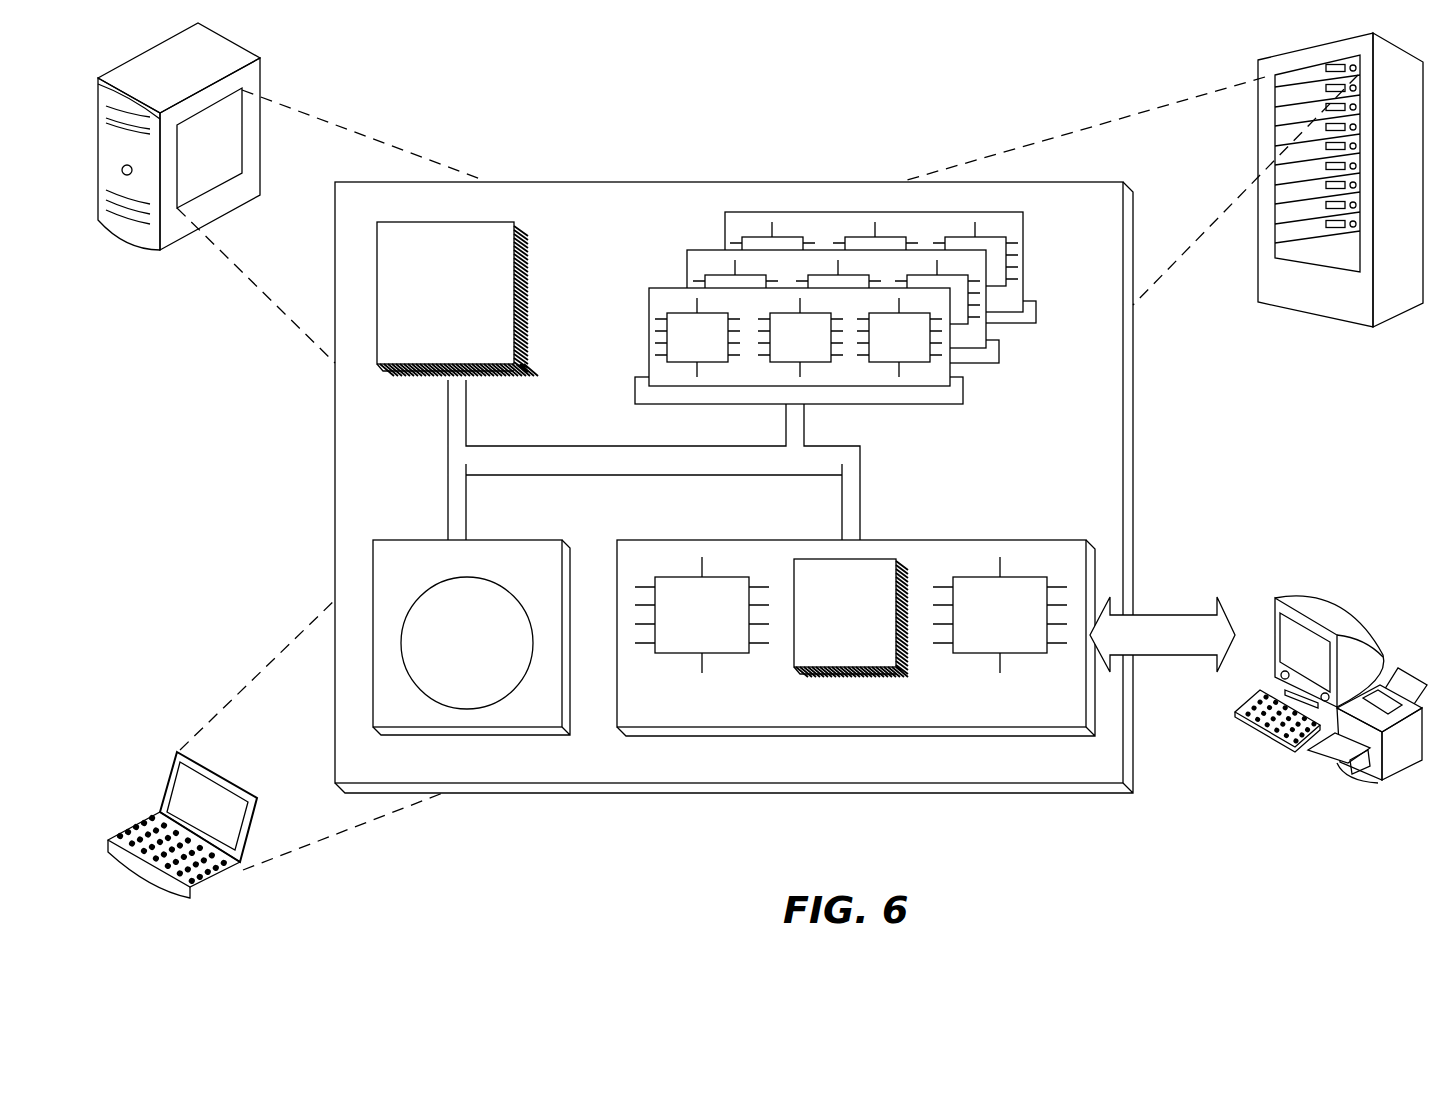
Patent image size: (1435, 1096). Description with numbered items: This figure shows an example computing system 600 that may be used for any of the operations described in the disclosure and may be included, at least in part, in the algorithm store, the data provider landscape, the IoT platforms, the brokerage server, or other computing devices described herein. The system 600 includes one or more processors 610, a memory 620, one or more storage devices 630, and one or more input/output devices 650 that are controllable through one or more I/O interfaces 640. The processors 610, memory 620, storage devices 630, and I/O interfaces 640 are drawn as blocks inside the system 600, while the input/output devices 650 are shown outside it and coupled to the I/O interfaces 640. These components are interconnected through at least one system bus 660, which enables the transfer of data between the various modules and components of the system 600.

The computing system 600 is at (544, 94).
The processor 610 is at (457, 299).
The memory 620 is at (1034, 369).
The storage device 630 is at (471, 637).
The I/O interface 640 is at (856, 638).
The input/output device 650 is at (1273, 605).
The system bus 660 is at (647, 465).